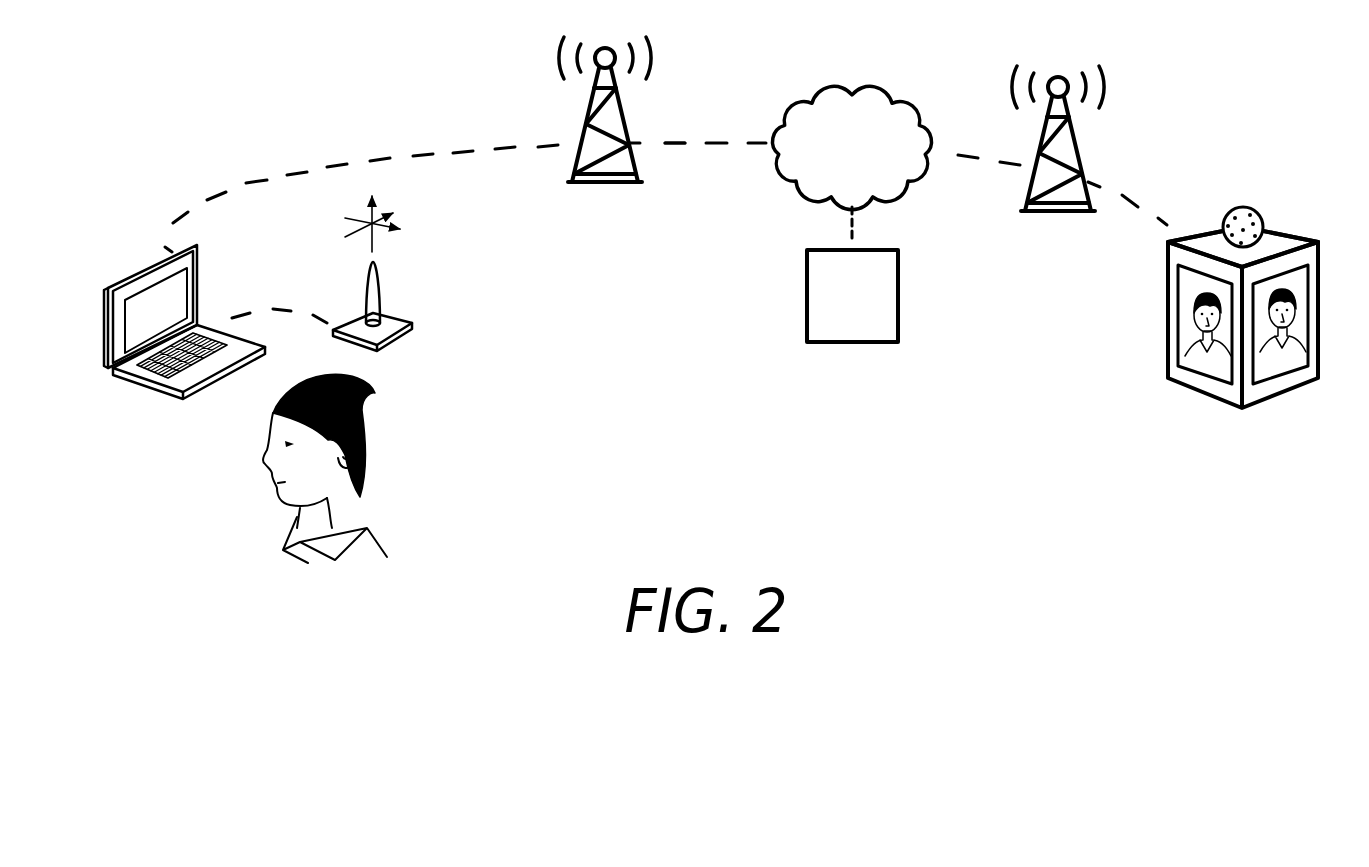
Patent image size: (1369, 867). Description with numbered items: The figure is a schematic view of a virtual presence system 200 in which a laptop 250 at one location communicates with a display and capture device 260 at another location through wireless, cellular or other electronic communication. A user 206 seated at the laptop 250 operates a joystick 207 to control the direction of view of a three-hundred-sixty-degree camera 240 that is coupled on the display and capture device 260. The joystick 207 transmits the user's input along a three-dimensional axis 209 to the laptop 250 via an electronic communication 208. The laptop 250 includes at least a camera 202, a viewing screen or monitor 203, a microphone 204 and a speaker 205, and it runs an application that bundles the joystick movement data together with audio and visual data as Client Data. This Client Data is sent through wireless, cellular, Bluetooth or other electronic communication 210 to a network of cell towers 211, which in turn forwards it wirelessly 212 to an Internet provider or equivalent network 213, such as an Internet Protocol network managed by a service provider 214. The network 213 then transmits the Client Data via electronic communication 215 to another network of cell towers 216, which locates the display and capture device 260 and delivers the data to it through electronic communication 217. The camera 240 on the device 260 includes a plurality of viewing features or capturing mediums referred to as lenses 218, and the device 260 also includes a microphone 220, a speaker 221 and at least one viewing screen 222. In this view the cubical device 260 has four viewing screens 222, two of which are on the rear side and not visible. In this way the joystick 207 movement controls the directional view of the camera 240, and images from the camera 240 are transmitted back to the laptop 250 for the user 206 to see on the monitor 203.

The virtual presence system 200 is at (306, 110).
The camera 202 is at (155, 340).
The viewing screen or monitor 203 is at (130, 322).
The microphone 204 is at (182, 382).
The speaker 205 is at (240, 352).
The user 206 is at (382, 542).
The joystick 207 is at (410, 335).
The electronic communication 208 is at (277, 307).
The three-dimensional axis 209 is at (380, 240).
The electronic communication 210 is at (247, 183).
The network of cell towers 211 is at (625, 118).
The wireless forwarding 212 is at (677, 143).
The network 213 is at (840, 92).
The service provider 214 is at (807, 262).
The electronic communication 215 is at (968, 158).
The network of cell towers 216 is at (1080, 158).
The electronic communication 217 is at (1122, 197).
The lens 218 is at (1253, 227).
The microphone 220 is at (1257, 311).
The speaker 221 is at (1283, 245).
The viewing screen 222 is at (1263, 368).
The 360-degree camera 240 is at (1241, 188).
The laptop 250 is at (143, 231).
The display and capture device 260 is at (1136, 395).